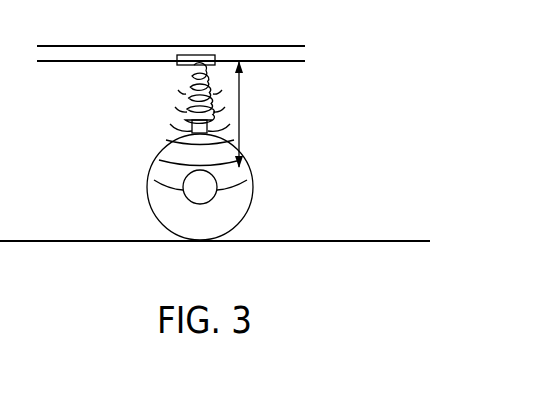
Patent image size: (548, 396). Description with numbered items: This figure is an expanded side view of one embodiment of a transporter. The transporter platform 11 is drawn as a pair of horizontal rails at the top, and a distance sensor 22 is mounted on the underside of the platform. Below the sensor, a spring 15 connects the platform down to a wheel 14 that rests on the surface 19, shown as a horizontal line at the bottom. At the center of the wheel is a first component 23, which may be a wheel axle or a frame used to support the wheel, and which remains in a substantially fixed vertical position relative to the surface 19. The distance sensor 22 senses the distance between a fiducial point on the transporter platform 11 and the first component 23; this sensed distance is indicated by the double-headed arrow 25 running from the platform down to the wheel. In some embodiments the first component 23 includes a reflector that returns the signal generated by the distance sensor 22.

The transporter platform 11 is at (288, 50).
The distance sensor 22 is at (200, 55).
The spring 15 is at (187, 92).
The wheel 14 is at (150, 191).
The first component 23 is at (218, 190).
The travel distance 25 is at (240, 102).
The surface 19 is at (399, 240).